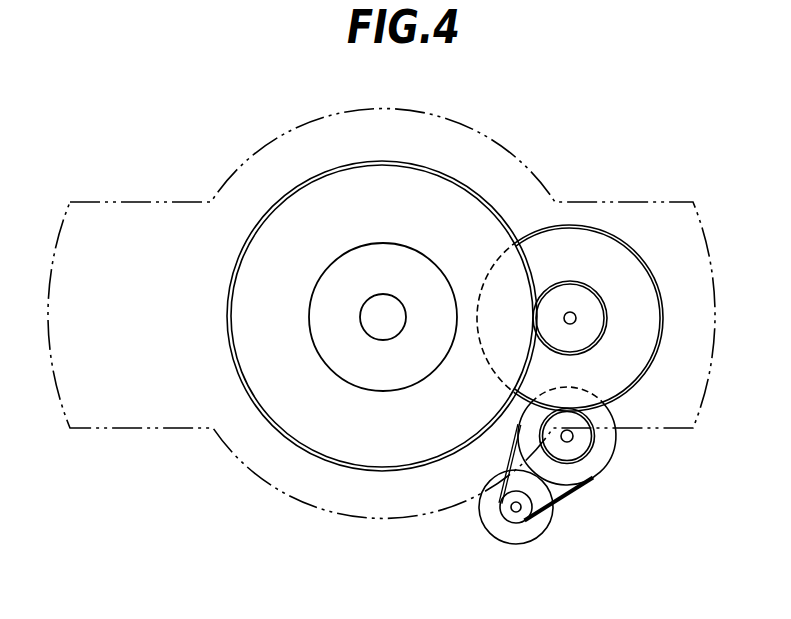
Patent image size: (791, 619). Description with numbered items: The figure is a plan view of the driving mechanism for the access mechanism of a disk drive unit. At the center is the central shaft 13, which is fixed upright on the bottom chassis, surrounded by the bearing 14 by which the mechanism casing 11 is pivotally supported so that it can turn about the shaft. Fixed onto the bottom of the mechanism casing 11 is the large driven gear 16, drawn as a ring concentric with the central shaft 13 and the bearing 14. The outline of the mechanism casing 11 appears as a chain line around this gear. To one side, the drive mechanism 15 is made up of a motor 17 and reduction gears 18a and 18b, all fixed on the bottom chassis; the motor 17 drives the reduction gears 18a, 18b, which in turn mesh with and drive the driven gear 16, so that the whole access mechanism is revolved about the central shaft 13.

The mechanism casing 11 is at (452, 122).
The central shaft 13 is at (365, 302).
The bearing 14 is at (398, 243).
The drive mechanism 15 is at (590, 498).
The driven gear 16 is at (473, 185).
The motor 17 is at (497, 543).
The reduction gear 18a is at (608, 462).
The reduction gear 18b is at (645, 372).